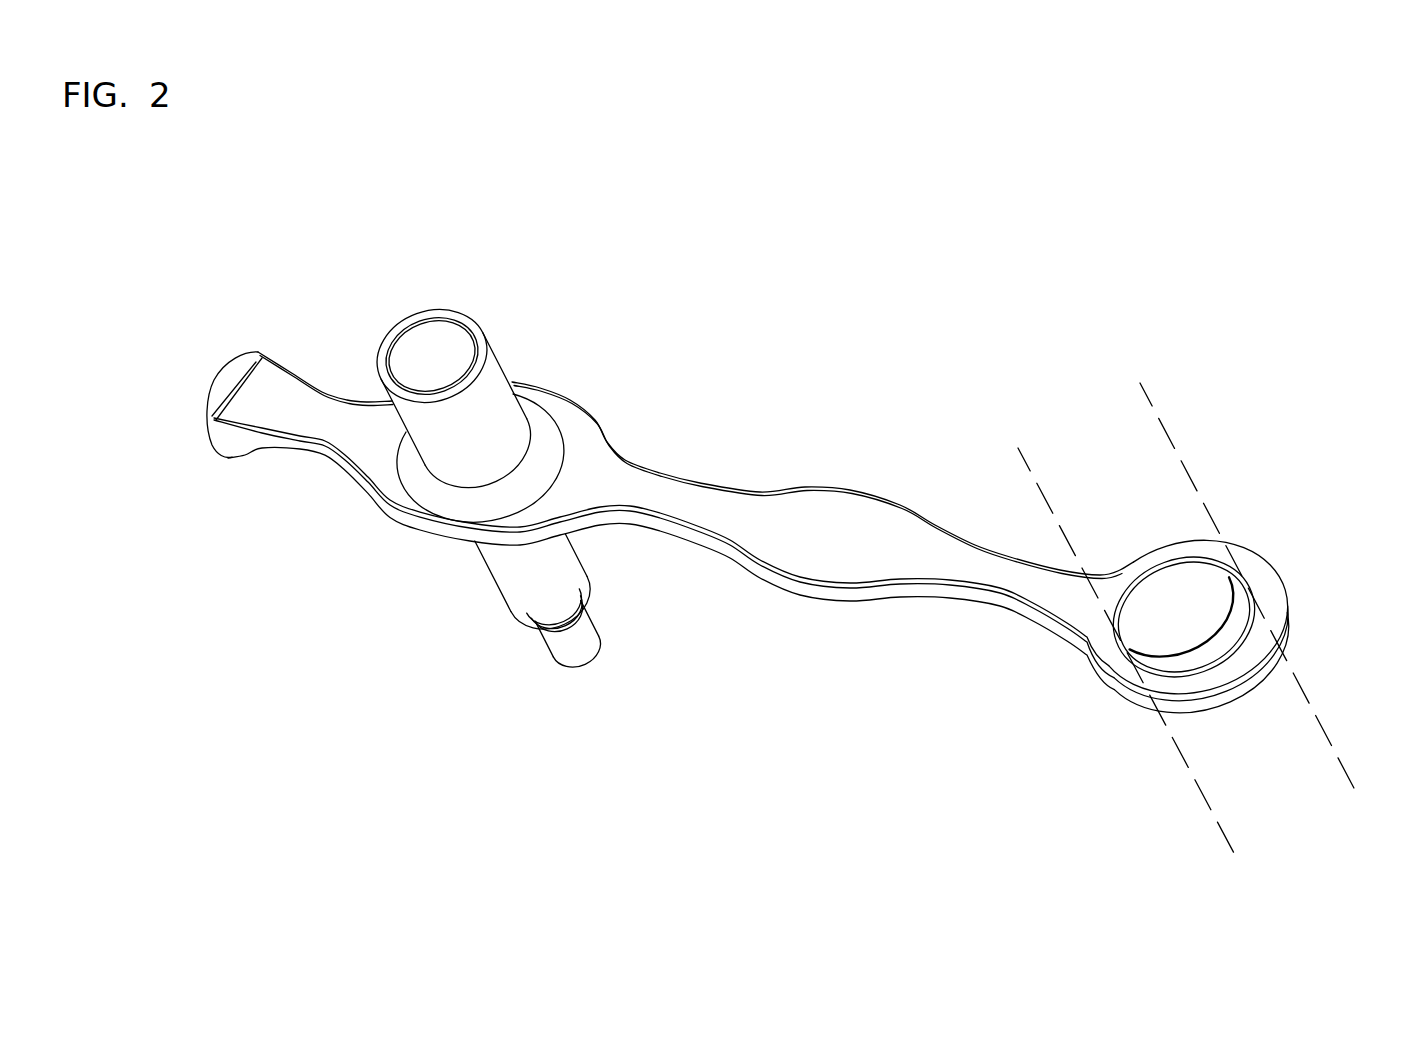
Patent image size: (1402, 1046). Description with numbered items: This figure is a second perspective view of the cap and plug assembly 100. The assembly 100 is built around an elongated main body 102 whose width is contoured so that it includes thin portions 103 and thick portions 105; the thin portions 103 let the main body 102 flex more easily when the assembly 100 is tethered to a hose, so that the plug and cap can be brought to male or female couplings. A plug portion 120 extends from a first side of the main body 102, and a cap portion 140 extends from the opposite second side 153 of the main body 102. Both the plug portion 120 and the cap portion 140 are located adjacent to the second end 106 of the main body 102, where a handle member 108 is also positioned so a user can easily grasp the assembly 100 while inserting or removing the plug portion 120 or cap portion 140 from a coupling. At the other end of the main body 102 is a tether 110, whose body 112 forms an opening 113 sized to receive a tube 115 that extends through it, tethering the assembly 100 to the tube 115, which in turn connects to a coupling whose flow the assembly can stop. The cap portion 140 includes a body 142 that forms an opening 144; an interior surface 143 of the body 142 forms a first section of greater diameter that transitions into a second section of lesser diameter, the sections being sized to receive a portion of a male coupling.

The cap and plug assembly 100 is at (838, 268).
The main body 102 is at (852, 568).
The thin portions 103 is at (1005, 582).
The thick portions 105 is at (875, 513).
The second end 106 is at (303, 425).
The handle member 108 is at (223, 383).
The tether 110 is at (1255, 562).
The body 112 is at (1167, 582).
The opening 113 is at (1227, 607).
The tube 115 is at (1172, 440).
The plug portion 120 is at (482, 598).
The cap portion 140 is at (515, 322).
The body 142 is at (432, 313).
The interior surface 143 is at (462, 335).
The opening 144 is at (412, 345).
The second side 153 is at (810, 527).